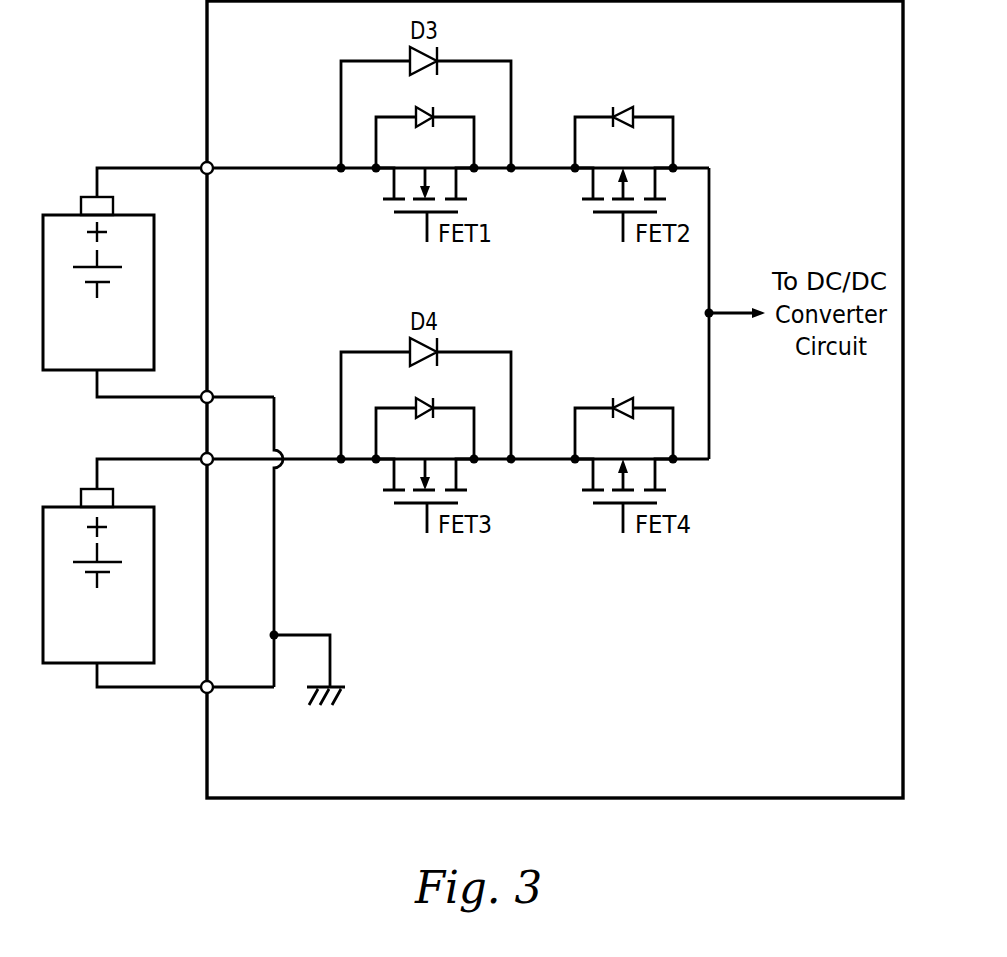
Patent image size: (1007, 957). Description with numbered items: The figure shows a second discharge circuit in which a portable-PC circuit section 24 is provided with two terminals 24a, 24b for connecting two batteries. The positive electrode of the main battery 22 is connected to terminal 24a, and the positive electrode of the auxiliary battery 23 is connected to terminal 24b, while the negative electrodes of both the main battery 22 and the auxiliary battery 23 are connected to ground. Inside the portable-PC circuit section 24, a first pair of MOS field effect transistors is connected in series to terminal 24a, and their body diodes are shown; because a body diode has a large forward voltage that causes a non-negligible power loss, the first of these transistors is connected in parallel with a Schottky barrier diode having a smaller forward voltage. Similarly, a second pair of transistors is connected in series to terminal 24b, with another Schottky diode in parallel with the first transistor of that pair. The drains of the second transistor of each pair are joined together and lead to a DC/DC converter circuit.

The main battery 22 is at (58, 371).
The auxiliary battery 23 is at (58, 664).
The portable-PC circuit section 24 is at (573, 782).
The terminal 24a is at (202, 164).
The terminal 24b is at (202, 455).